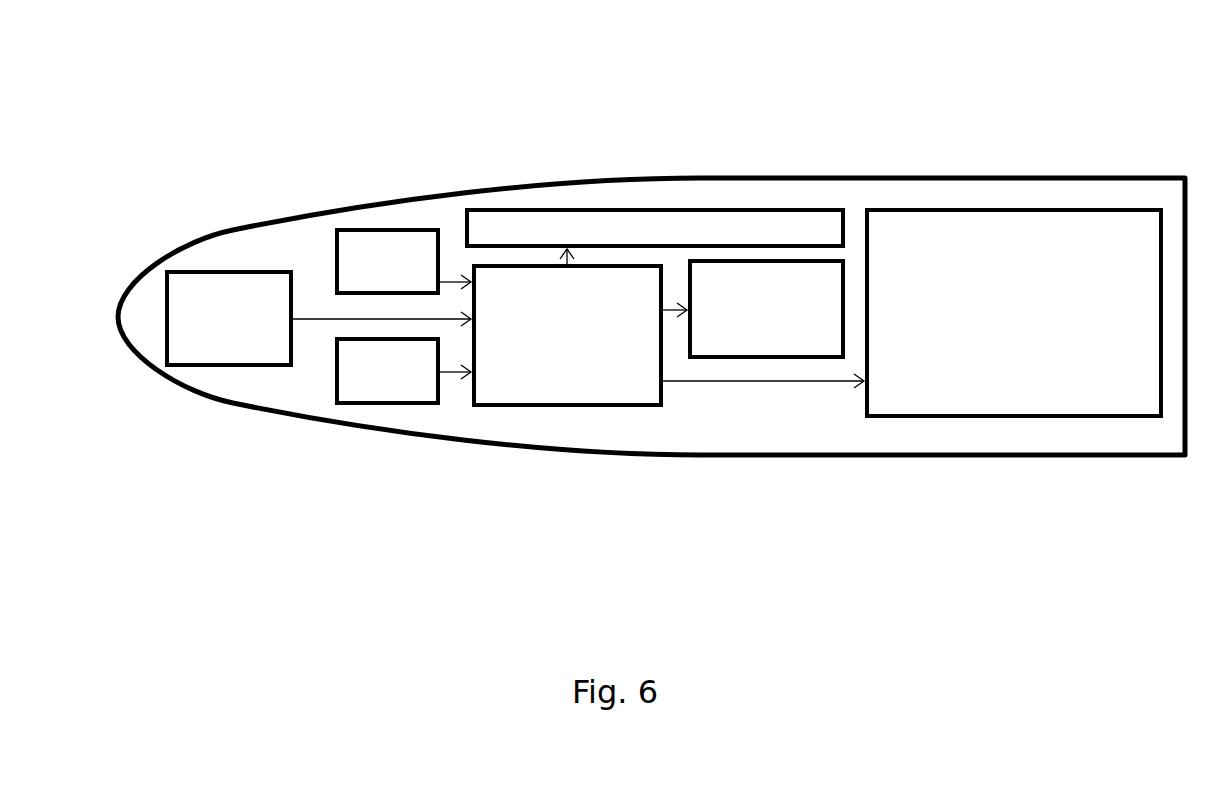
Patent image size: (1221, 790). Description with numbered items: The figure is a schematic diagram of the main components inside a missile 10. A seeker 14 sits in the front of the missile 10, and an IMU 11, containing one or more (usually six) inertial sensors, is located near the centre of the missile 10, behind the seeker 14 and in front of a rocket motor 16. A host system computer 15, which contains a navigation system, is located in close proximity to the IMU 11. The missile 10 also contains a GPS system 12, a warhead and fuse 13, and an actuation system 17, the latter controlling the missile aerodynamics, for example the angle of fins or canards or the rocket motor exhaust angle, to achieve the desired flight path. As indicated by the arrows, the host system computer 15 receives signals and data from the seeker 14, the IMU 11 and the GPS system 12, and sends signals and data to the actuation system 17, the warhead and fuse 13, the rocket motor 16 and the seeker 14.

The missile 10 is at (988, 455).
The IMU 11 is at (379, 405).
The GPS system 12 is at (395, 228).
The warhead and fuse 13 is at (778, 359).
The seeker 14 is at (232, 270).
The host system computer 15 is at (576, 407).
The rocket motor 16 is at (1035, 208).
The actuation system 17 is at (685, 208).